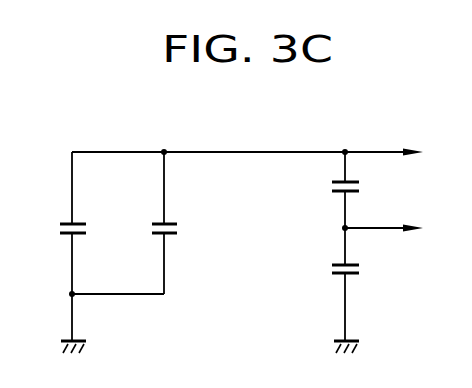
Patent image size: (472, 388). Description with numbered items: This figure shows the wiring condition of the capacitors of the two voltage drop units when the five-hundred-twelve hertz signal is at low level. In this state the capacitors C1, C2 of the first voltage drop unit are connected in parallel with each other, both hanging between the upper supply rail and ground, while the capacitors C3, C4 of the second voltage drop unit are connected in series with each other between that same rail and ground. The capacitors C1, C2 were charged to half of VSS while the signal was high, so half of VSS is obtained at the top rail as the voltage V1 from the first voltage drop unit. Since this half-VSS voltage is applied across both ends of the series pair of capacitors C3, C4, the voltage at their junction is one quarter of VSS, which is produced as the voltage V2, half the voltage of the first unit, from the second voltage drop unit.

The capacitor C1 is at (58, 229).
The capacitor C2 is at (181, 229).
The capacitor C3 is at (328, 187).
The capacitor C4 is at (328, 270).
The voltage V1 is at (427, 153).
The voltage V2 is at (427, 229).